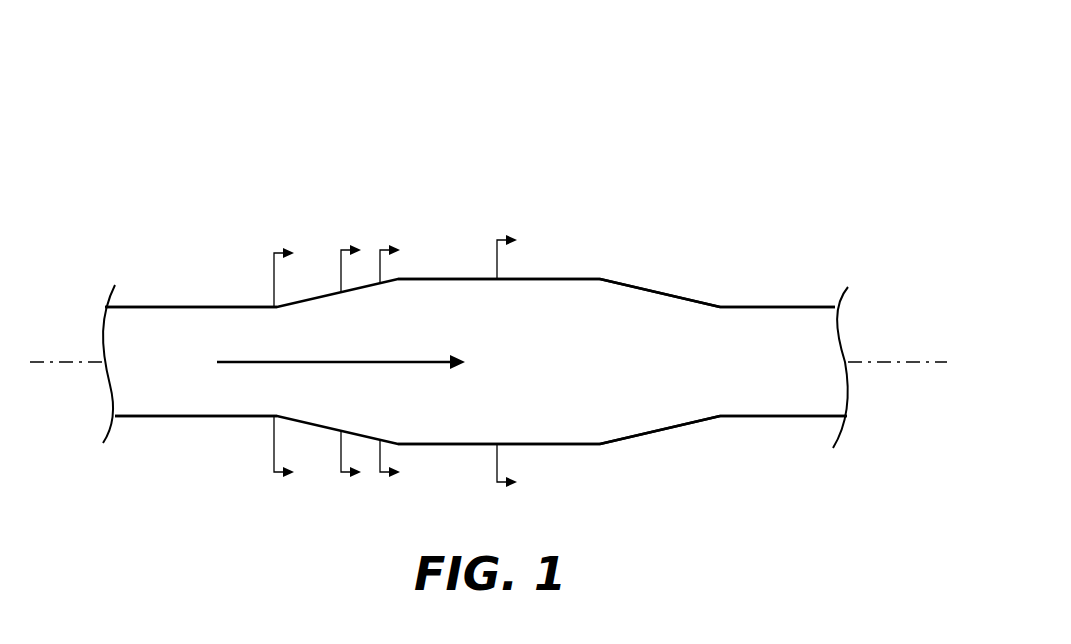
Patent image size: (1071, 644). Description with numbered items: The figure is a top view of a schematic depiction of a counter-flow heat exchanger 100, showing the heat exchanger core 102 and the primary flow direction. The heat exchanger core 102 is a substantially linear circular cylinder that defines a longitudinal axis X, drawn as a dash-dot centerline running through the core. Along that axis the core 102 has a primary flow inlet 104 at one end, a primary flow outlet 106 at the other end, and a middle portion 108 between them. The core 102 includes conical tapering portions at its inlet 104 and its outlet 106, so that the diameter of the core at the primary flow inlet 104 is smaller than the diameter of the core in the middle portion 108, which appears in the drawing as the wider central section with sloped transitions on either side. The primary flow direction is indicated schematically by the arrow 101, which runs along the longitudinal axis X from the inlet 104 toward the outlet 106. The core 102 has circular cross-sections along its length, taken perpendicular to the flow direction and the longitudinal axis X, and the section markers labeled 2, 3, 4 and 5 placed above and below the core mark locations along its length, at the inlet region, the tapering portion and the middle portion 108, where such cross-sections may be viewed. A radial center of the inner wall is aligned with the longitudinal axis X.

The counter-flow heat exchanger 100 is at (727, 130).
The arrow 101 is at (255, 363).
The heat exchanger core 102 is at (629, 277).
The primary flow inlet 104 is at (277, 306).
The primary flow outlet 106 is at (720, 308).
The middle portion 108 is at (540, 278).
The section line 2 is at (284, 367).
The section line 3 is at (351, 362).
The section line 4 is at (400, 364).
The section line 5 is at (517, 364).
The longitudinal axis X is at (890, 362).